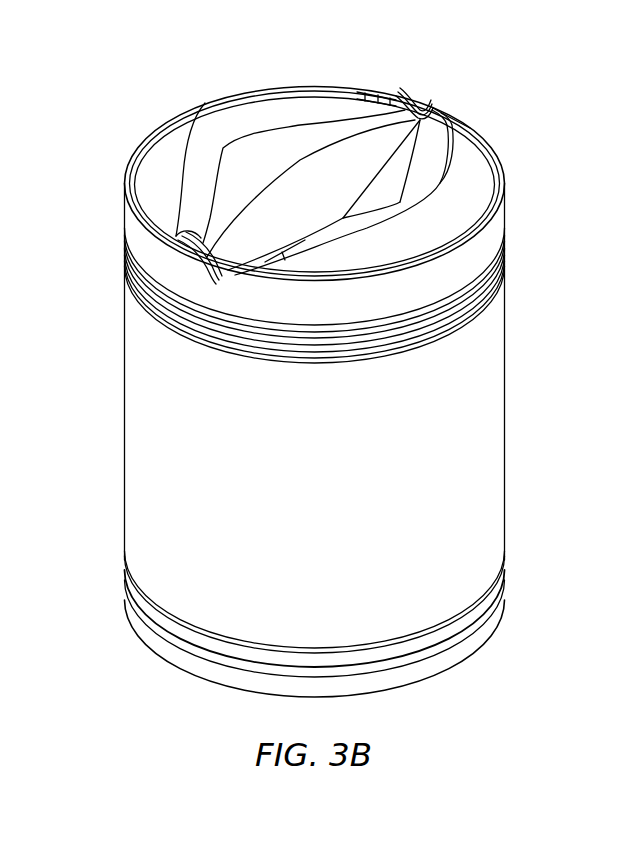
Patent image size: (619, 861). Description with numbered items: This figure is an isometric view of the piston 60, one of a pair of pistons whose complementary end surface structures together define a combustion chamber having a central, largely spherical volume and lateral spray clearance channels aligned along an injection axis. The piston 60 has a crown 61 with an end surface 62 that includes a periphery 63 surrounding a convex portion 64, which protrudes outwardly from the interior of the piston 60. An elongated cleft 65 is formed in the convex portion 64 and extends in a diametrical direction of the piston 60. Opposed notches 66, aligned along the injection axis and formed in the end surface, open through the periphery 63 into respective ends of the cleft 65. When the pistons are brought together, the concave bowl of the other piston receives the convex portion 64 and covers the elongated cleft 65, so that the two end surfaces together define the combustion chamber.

The piston 60 is at (522, 428).
The crown 61 is at (487, 235).
The end surface 62 is at (468, 157).
The periphery 63 is at (495, 155).
The convex portion 64 is at (166, 171).
The elongated cleft 65 is at (337, 160).
The opposed notches 66 is at (412, 108).